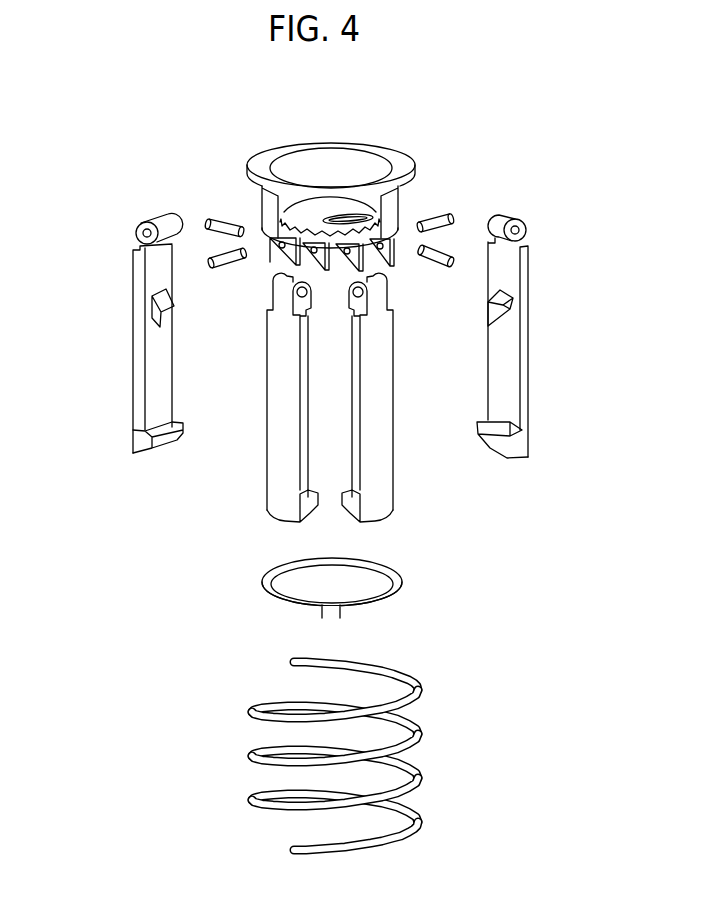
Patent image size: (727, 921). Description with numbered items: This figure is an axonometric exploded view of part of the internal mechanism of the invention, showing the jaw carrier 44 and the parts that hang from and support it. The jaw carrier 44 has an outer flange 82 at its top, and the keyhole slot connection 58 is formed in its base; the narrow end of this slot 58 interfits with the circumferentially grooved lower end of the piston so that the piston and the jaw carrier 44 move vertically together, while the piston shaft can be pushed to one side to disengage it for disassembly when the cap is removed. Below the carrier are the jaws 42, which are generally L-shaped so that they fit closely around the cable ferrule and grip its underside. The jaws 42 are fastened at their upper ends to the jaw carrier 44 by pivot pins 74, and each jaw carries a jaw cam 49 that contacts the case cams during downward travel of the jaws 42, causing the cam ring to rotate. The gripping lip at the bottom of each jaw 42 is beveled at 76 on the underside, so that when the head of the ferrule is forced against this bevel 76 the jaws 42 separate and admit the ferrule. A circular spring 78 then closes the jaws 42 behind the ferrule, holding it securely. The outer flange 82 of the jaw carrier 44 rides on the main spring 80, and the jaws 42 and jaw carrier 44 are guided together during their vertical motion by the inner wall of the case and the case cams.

The jaws 42 is at (334, 367).
The jaw carrier 44 is at (268, 212).
The jaw cams 49 is at (158, 303).
The keyhole slot connection 58 is at (352, 216).
The pivot pins 74 is at (442, 255).
The bevel 76 is at (497, 445).
The circular spring 78 is at (403, 593).
The main spring 80 is at (417, 733).
The outer flange 82 is at (392, 155).